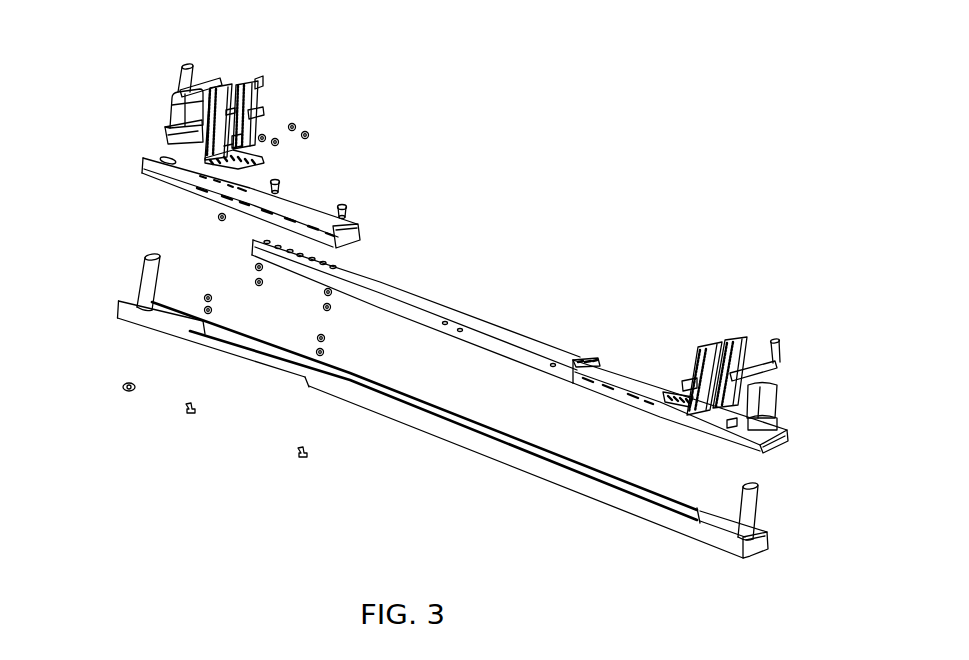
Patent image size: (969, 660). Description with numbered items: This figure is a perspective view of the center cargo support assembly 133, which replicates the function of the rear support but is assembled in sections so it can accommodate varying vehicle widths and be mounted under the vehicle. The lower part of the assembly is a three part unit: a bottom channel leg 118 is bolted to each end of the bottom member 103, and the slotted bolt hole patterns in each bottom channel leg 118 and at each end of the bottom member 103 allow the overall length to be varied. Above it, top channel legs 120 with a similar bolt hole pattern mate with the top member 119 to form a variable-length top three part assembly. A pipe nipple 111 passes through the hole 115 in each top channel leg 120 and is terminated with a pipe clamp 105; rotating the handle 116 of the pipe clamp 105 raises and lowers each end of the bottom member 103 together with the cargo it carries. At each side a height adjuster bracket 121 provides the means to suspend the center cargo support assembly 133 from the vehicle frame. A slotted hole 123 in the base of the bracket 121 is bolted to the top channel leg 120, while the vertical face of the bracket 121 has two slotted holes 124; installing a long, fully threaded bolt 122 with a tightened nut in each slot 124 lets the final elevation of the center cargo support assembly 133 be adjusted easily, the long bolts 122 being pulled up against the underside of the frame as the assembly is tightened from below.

The bottom member 103 is at (455, 445).
The pipe clamp 105 is at (170, 103).
The pipe nipple 111 is at (148, 273).
The hole 115 is at (147, 150).
The handle 116 is at (182, 78).
The bottom channel leg 118 is at (222, 350).
The top member 119 is at (390, 282).
The top channel leg 120 is at (313, 203).
The height adjuster bracket 121 is at (253, 80).
The long bolt 122 is at (264, 117).
The slotted hole 123 is at (263, 160).
The slotted hole 124 is at (262, 90).
The center cargo support assembly 133 is at (577, 221).